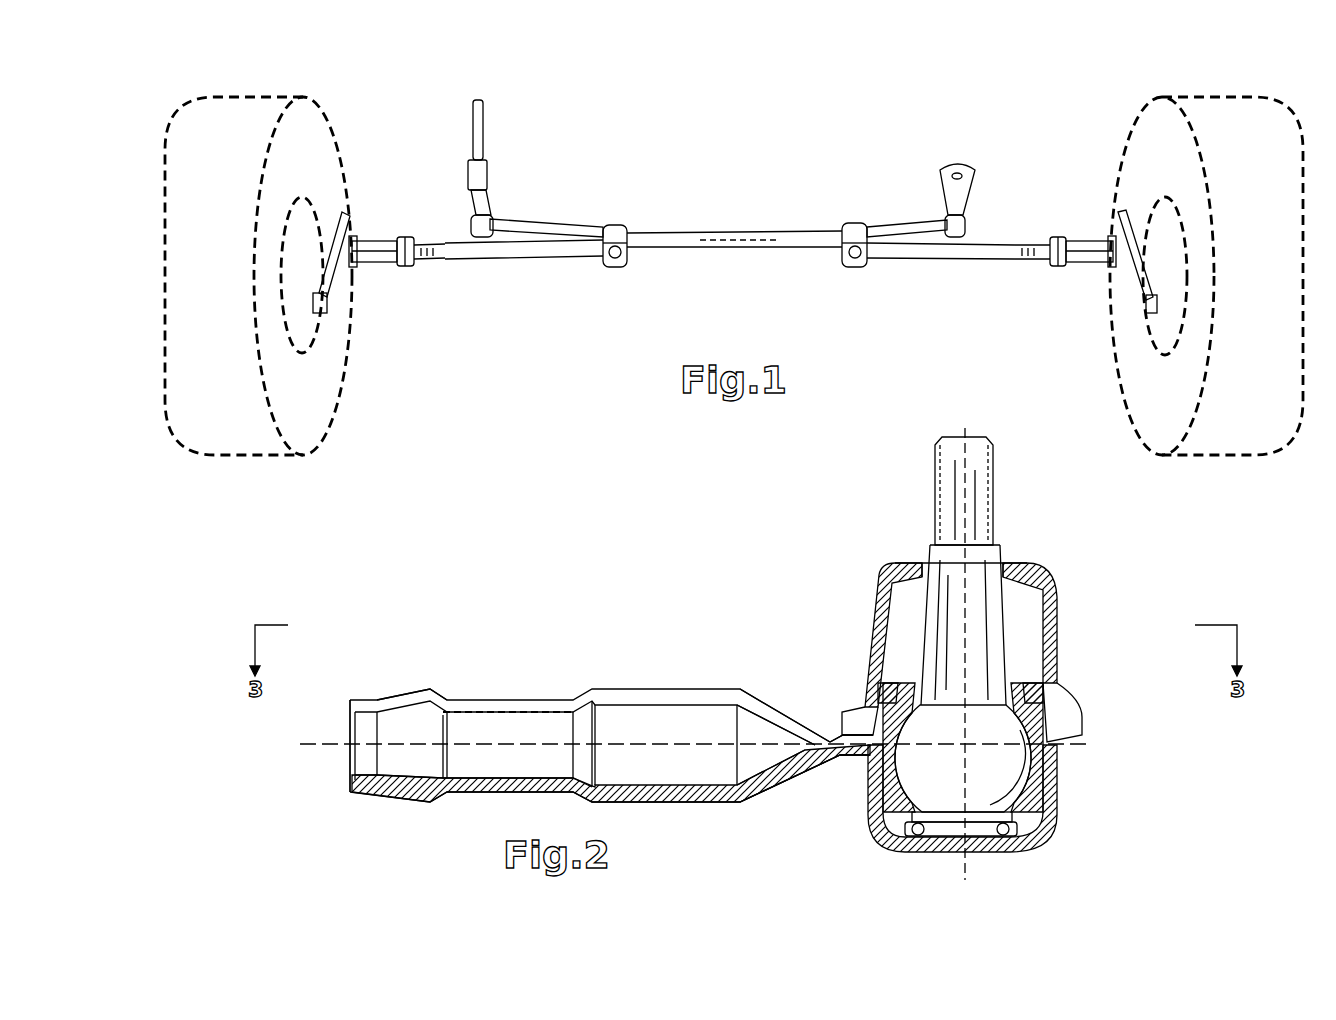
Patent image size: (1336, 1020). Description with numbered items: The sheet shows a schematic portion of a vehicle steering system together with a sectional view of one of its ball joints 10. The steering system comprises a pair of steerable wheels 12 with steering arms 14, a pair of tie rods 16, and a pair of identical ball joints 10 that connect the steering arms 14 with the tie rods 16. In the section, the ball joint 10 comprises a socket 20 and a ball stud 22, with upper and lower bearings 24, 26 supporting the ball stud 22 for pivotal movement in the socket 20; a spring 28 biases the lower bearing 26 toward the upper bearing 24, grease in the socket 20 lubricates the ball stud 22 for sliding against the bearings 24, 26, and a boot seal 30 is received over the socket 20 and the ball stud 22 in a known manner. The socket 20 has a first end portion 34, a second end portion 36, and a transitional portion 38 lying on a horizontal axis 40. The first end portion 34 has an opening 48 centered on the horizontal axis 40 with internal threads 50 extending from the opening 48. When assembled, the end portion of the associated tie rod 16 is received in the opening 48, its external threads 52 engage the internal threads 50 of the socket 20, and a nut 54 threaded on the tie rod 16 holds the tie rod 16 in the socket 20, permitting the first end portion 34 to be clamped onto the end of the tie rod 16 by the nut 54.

In FIG. 1, the ball joint 10 is at (362, 248).
In FIG. 2, the ball joint 10 is at (813, 636).
In FIG. 1, the steerable wheels 12 is at (281, 96).
In FIG. 1, the steering arms 14 is at (330, 298).
In FIG. 1, the tie rods 16 is at (526, 252).
In FIG. 2, the socket 20 is at (657, 688).
In FIG. 2, the ball stud 22 is at (933, 492).
In FIG. 2, the upper bearing 24 is at (1048, 687).
In FIG. 2, the lower bearing 26 is at (1053, 787).
In FIG. 2, the spring 28 is at (950, 840).
In FIG. 2, the boot seal 30 is at (1043, 587).
In FIG. 2, the first end portion 34 is at (430, 690).
In FIG. 2, the second end portion 36 is at (1053, 832).
In FIG. 2, the transitional portion 38 is at (772, 707).
In FIG. 2, the horizontal axis 40 is at (322, 748).
In FIG. 2, the opening 48 is at (340, 727).
In FIG. 2, the internal threads 50 is at (488, 714).
In FIG. 1, the external threads 52 is at (430, 258).
In FIG. 1, the nut 54 is at (400, 263).